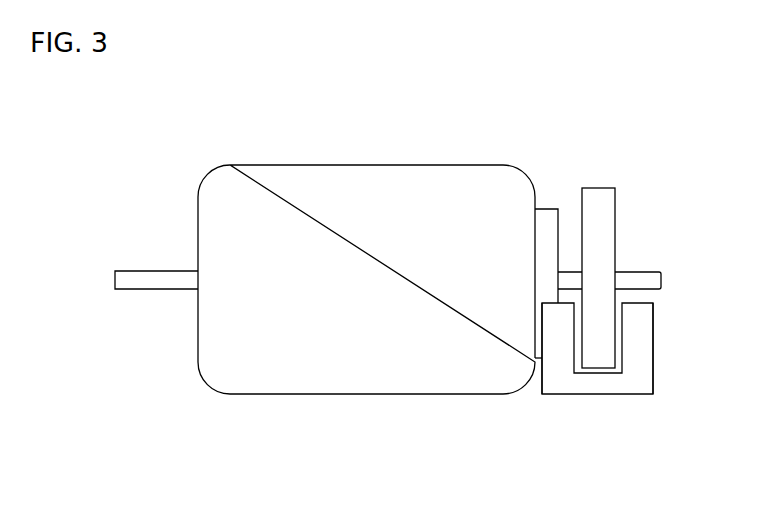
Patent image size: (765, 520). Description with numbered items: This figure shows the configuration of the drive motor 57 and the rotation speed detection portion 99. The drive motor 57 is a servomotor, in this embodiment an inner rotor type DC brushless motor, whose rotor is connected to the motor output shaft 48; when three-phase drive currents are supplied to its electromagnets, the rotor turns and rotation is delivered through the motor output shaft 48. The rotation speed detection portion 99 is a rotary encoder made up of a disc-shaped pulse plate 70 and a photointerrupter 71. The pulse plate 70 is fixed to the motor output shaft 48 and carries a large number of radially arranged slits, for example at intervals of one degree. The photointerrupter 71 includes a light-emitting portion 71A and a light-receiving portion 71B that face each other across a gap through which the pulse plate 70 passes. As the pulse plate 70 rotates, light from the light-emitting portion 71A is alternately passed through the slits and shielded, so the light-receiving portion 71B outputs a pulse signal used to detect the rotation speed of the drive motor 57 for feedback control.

The drive motor 57 is at (215, 171).
The motor output shaft 48 is at (651, 269).
The pulse plate 70 is at (600, 187).
The photointerrupter 71 is at (593, 410).
The light-emitting portion 71A is at (540, 368).
The light-receiving portion 71B is at (655, 340).
The rotation speed detection portion 99 is at (653, 168).